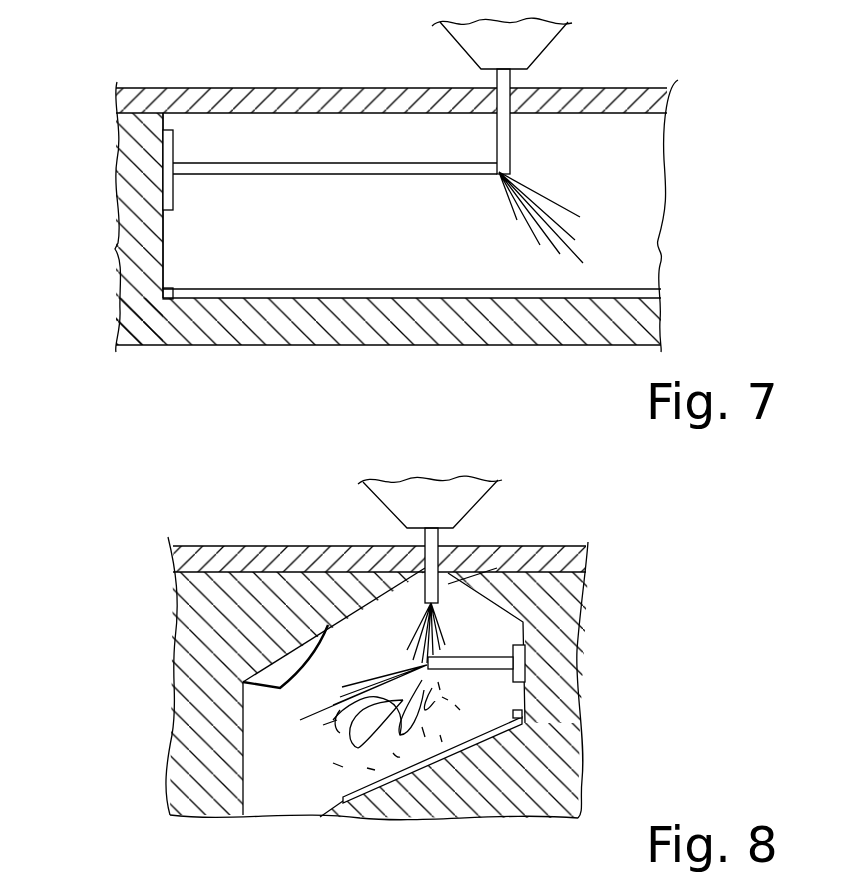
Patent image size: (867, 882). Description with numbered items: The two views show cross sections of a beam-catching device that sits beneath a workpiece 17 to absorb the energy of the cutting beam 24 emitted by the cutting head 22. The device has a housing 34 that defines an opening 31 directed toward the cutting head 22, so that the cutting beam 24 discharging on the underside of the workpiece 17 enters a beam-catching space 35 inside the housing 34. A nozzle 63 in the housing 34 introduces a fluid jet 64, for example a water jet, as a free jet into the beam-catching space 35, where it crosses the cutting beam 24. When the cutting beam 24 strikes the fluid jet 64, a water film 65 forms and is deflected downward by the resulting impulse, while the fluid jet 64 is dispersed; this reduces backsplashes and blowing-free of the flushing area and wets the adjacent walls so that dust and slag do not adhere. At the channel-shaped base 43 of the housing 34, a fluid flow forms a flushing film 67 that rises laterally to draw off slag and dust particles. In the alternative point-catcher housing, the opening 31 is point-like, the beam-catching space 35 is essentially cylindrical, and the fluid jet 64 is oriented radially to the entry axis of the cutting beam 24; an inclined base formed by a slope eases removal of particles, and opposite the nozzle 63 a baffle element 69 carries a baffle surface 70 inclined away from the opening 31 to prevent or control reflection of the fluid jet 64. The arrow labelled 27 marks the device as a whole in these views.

In FIG. 7, the workpiece 17 is at (184, 100).
In FIG. 8, the workpiece 17 is at (222, 560).
In FIG. 7, the cutting head 22 is at (534, 34).
In FIG. 8, the cutting head 22 is at (464, 490).
In FIG. 7, the cutting beam 24 is at (531, 72).
In FIG. 8, the cutting beam 24 is at (460, 532).
In FIG. 7, the channel assembly 27 is at (114, 292).
In FIG. 8, the channel assembly 27 is at (157, 782).
In FIG. 8, the opening 31 is at (553, 548).
In FIG. 7, the housing 34 is at (142, 250).
In FIG. 8, the housing 34 is at (557, 653).
In FIG. 7, the beam-catching space 35 is at (366, 143).
In FIG. 8, the beam-catching space 35 is at (292, 703).
In FIG. 7, the base 43 is at (567, 300).
In FIG. 8, the base 43 is at (380, 790).
In FIG. 7, the nozzle 63 is at (167, 154).
In FIG. 8, the nozzle 63 is at (518, 674).
In FIG. 7, the fluid jet 64 is at (276, 170).
In FIG. 8, the fluid jet 64 is at (478, 660).
In FIG. 7, the water film 65 is at (567, 210).
In FIG. 8, the water film 65 is at (353, 708).
In FIG. 7, the flushing film 67 is at (416, 300).
In FIG. 8, the flushing film 67 is at (455, 758).
In FIG. 8, the baffle element 69 is at (292, 649).
In FIG. 8, the baffle surface 70 is at (325, 647).